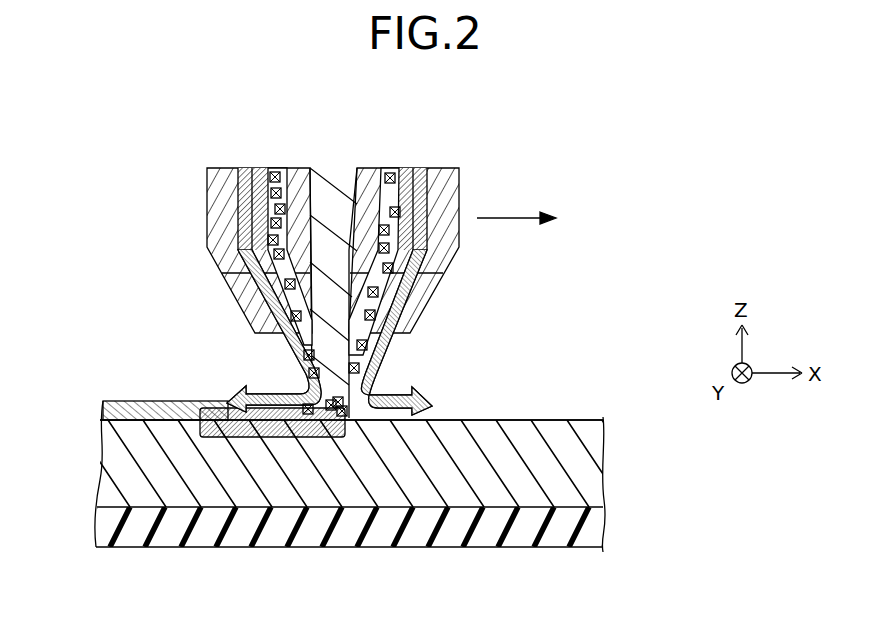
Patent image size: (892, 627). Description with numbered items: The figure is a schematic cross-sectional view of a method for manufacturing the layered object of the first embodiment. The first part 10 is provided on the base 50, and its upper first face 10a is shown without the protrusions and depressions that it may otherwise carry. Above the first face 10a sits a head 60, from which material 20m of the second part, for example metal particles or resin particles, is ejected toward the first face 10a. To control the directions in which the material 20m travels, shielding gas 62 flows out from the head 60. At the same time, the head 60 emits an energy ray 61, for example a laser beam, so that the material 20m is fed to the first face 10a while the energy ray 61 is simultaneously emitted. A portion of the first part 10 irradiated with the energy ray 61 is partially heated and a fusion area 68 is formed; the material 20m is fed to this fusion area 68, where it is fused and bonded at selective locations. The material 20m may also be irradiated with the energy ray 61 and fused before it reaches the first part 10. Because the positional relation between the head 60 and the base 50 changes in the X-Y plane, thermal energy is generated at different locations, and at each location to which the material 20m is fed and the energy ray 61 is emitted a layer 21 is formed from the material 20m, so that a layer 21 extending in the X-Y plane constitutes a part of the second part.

The head 60 is at (440, 192).
The energy ray 61 is at (330, 274).
The shielding gas 62 is at (283, 352).
The material 20m is at (387, 350).
The layer 21 is at (131, 416).
The first face 10a is at (548, 420).
The first part 10 is at (556, 459).
The base 50 is at (556, 527).
The fusion area 68 is at (246, 437).